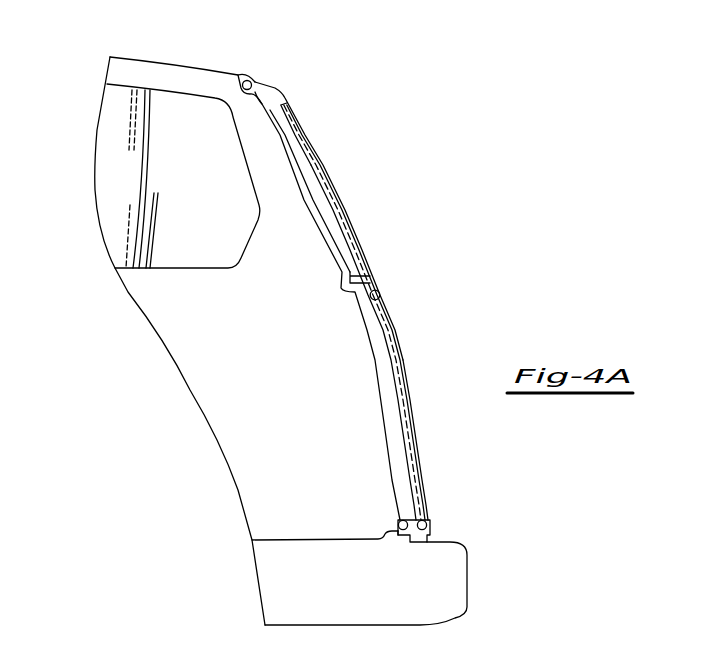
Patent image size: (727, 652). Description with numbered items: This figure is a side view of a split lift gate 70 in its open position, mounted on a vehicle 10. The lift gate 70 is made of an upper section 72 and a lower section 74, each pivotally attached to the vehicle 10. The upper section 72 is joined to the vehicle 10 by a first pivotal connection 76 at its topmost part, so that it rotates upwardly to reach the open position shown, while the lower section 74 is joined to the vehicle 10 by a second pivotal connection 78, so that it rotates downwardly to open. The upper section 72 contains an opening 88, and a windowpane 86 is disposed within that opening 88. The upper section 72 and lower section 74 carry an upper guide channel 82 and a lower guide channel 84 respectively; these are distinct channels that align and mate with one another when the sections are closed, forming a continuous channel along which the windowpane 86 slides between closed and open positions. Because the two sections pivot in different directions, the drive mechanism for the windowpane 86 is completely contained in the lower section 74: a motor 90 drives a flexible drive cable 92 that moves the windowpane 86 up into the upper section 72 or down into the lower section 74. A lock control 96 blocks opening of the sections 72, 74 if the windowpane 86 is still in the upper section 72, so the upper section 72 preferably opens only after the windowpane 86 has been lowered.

The vehicle 10 is at (148, 74).
The lift gate 70 is at (335, 110).
The upper section 72 is at (320, 192).
The lower section 74 is at (400, 412).
The first pivotal connection 76 is at (254, 82).
The second pivotal connection 78 is at (398, 530).
The upper guide channel 82 is at (348, 229).
The lower guide channel 84 is at (376, 321).
The windowpane 86 is at (297, 120).
The opening 88 is at (323, 158).
The motor 90 is at (432, 522).
The flexible drive cable 92 is at (400, 516).
The lock control 96 is at (381, 295).